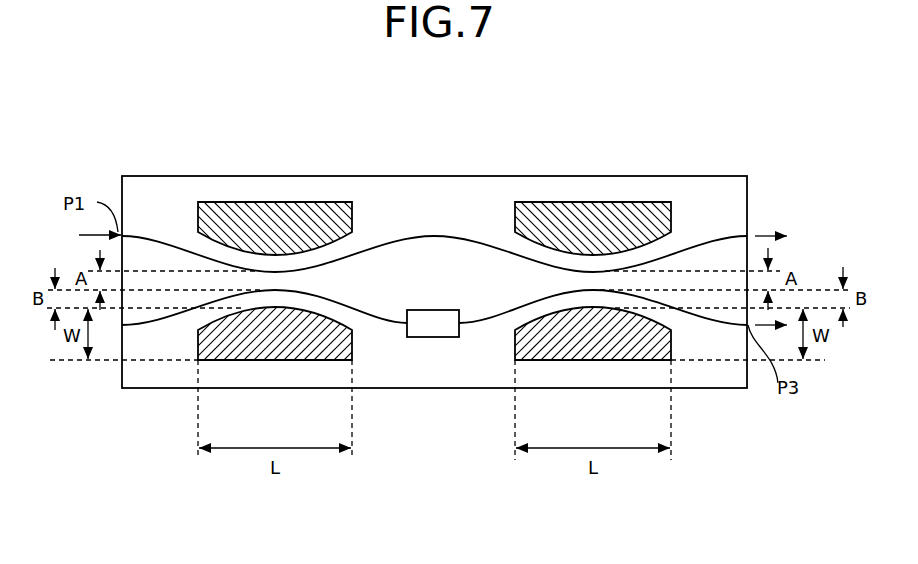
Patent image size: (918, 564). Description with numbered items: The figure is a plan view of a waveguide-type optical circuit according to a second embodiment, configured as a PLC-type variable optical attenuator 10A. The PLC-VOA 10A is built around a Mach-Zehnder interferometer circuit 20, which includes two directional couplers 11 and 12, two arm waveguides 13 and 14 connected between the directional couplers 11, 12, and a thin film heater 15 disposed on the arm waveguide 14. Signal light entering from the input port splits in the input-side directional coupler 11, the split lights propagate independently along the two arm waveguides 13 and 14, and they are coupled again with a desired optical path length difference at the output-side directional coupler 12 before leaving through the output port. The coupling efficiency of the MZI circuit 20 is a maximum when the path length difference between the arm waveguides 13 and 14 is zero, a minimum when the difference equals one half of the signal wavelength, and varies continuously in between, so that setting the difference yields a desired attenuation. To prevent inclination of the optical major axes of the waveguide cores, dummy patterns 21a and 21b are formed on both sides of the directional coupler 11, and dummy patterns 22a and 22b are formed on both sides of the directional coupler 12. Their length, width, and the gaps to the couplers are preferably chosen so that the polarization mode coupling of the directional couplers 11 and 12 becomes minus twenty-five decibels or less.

The PLC-type variable optical attenuator 10A is at (436, 167).
The directional coupler 11 is at (188, 242).
The directional coupler 12 is at (681, 242).
The arm waveguide 13 is at (437, 235).
The arm waveguide 14 is at (390, 323).
The thin film heater 15 is at (436, 337).
The Mach-Zehnder interferometer circuit 20 is at (412, 235).
The dummy pattern 21a is at (317, 213).
The dummy pattern 21b is at (227, 360).
The dummy pattern 22a is at (590, 215).
The dummy pattern 22b is at (628, 356).